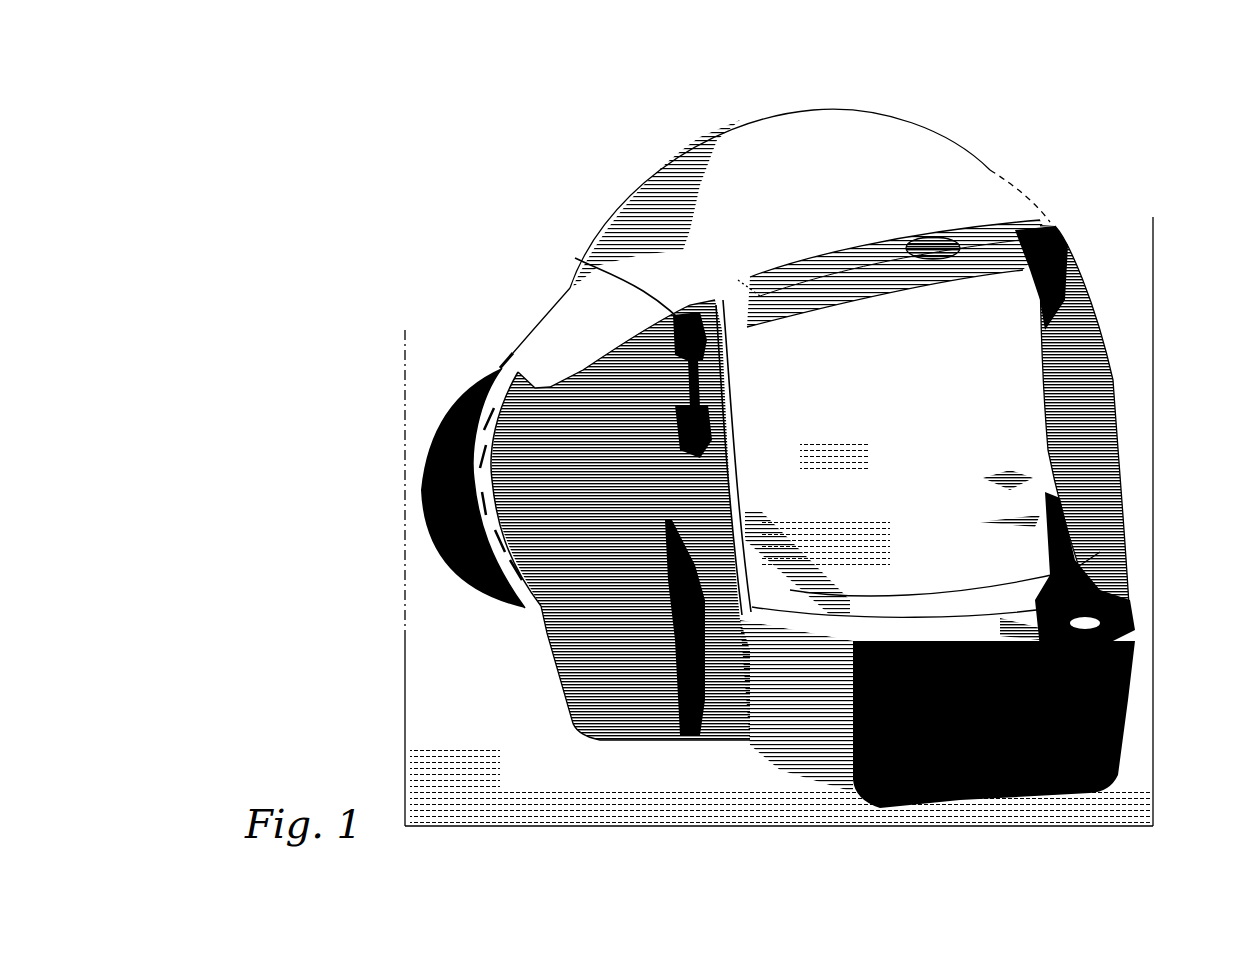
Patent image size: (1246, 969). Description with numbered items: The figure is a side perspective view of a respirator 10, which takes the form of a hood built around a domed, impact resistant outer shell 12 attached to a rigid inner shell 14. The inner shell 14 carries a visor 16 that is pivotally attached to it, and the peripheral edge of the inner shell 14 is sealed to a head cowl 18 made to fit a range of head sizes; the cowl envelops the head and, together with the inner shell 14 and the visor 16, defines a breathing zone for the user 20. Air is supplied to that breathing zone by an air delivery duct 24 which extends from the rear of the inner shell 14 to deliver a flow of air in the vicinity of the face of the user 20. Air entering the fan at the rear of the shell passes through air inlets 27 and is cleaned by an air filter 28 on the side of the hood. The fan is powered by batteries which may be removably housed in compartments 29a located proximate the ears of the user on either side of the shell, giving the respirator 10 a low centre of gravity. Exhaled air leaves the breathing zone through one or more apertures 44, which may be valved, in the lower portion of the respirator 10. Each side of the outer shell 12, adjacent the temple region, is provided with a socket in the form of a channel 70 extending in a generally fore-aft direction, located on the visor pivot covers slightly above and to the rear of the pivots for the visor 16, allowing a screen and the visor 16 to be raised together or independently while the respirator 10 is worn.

The respirator 10 is at (567, 133).
The outer shell 12 is at (937, 145).
The inner shell 14 is at (1055, 623).
The visor 16 is at (1103, 343).
The head cowl 18 is at (1023, 767).
The user 20 is at (1032, 555).
The air delivery duct 24 is at (737, 277).
The air inlets 27 is at (512, 353).
The air filter 28 is at (430, 413).
The battery compartments 29a is at (723, 607).
The apertures 44 is at (1013, 627).
The channel 70 is at (587, 255).